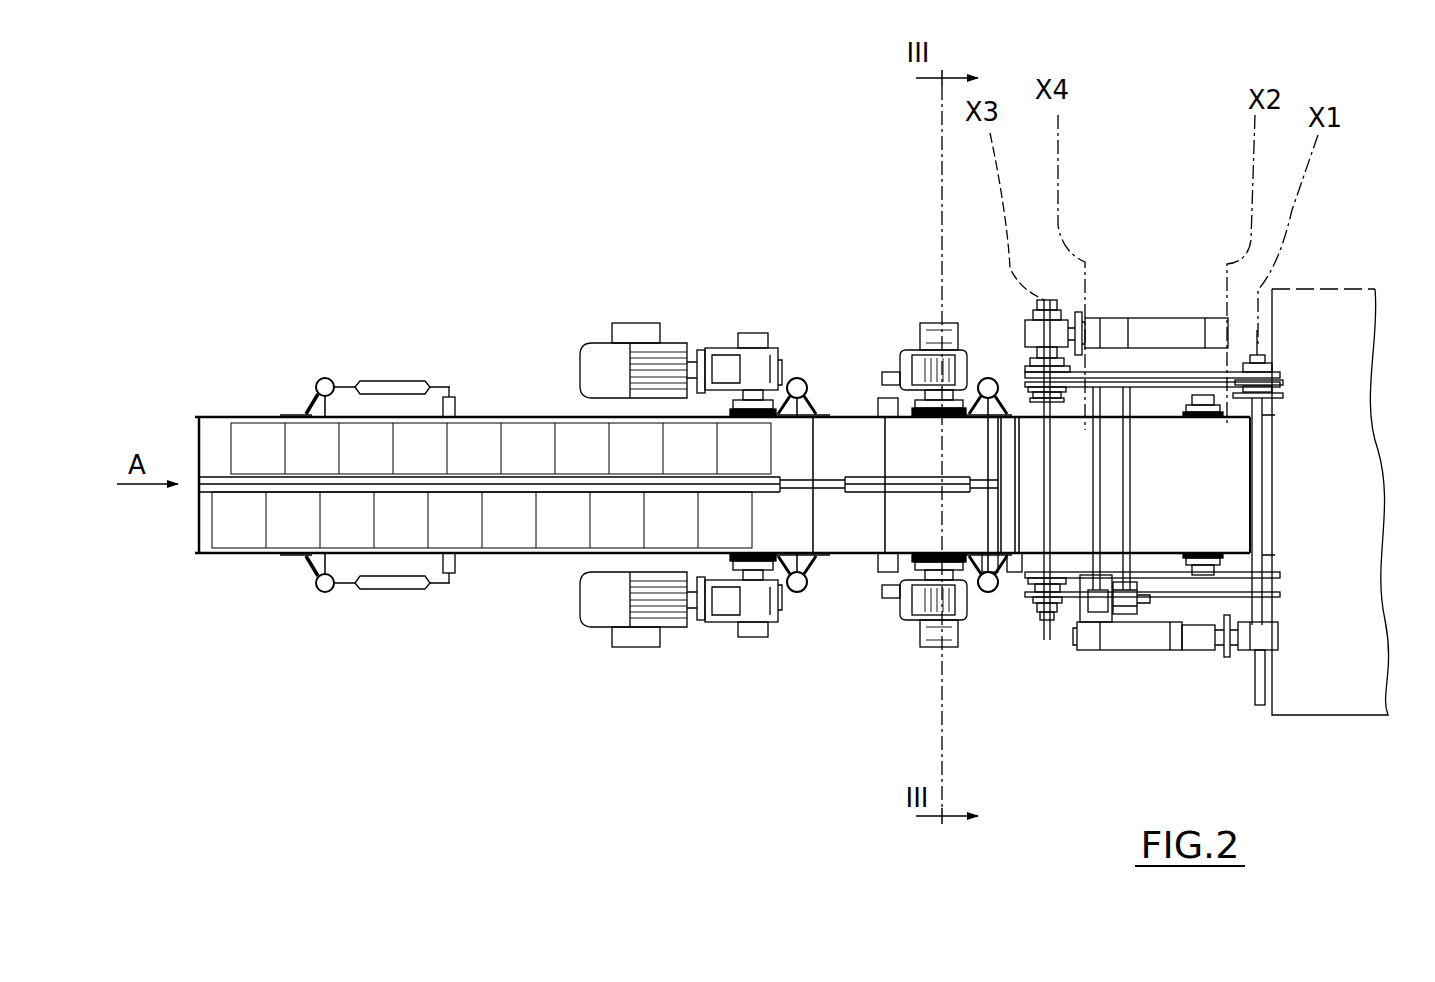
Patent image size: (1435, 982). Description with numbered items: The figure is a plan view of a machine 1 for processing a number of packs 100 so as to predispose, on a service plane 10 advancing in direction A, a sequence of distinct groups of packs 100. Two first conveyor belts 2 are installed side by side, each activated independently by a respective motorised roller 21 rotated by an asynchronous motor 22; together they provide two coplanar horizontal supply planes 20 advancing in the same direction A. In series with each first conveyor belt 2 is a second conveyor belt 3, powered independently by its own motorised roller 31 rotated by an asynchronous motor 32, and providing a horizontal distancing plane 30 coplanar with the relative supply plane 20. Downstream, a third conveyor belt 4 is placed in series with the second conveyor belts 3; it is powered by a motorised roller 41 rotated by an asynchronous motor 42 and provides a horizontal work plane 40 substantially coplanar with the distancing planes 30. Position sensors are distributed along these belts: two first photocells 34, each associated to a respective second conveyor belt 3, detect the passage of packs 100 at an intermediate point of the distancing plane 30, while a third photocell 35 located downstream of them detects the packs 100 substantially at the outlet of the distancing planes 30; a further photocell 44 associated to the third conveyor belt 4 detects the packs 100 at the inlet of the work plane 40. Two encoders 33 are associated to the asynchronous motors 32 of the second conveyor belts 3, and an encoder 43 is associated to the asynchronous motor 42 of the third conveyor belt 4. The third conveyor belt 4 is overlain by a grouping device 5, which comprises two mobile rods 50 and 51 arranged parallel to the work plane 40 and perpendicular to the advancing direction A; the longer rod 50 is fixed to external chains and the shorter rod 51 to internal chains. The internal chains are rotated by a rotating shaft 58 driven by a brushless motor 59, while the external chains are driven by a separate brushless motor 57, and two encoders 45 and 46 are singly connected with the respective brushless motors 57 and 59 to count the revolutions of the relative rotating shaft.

The machine 1 is at (372, 192).
The first conveyor belt 2 is at (199, 440).
The second conveyor belt 3 is at (845, 400).
The third conveyor belt 4 is at (1188, 436).
The grouping device 5 is at (1040, 256).
The service plane 10 is at (1340, 390).
The supply plane 20 is at (215, 440).
The motorised roller 21 is at (796, 378).
The asynchronous motor 22 is at (670, 345).
The distancing plane 30 is at (833, 452).
The motorised roller 31 is at (979, 378).
The asynchronous motor 32 is at (903, 350).
The encoder 33 is at (935, 350).
The first photocell 34 is at (866, 415).
The third photocell 35 is at (1013, 572).
The work plane 40 is at (1203, 372).
The motorised roller 41 is at (1265, 615).
The asynchronous motor 42 is at (1165, 650).
The encoder 43 is at (1092, 610).
The photocell 44 is at (1036, 596).
The encoder 45 is at (1085, 642).
The encoder 46 is at (1220, 333).
The mobile rod 50 is at (1130, 458).
The mobile rod 51 is at (1097, 472).
The brushless motor 57 is at (1240, 652).
The rotating shaft 58 is at (1053, 490).
The brushless motor 59 is at (1070, 318).
The pack 100 is at (258, 437).